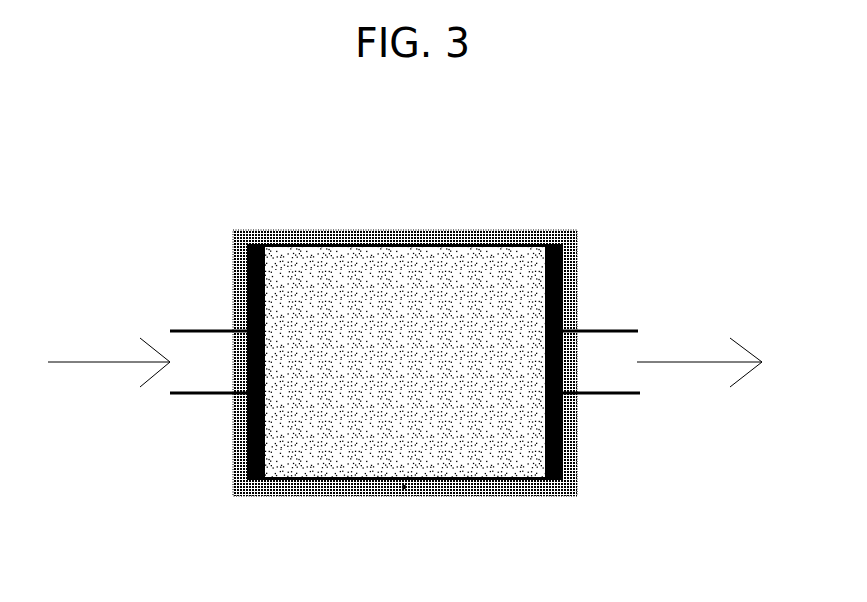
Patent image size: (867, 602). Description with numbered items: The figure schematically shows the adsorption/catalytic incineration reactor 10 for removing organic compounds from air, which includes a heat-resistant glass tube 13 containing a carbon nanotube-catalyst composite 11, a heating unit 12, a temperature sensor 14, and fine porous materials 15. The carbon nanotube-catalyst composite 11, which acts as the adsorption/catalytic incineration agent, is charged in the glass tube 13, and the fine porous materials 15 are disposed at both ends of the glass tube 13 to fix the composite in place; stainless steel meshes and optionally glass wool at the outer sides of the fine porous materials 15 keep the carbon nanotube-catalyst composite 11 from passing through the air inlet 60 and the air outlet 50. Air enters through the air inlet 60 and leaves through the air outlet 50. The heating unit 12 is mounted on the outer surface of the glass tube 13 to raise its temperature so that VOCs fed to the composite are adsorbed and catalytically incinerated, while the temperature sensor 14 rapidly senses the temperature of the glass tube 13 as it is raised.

The adsorption/catalytic incineration reactor 10 is at (223, 185).
The carbon nanotube-catalyst composite 11 is at (467, 315).
The heating unit 12 is at (432, 233).
The glass tube 13 is at (358, 245).
The temperature sensor 14 is at (404, 486).
The fine porous material 15 is at (266, 247).
The air outlet 50 is at (608, 324).
The air inlet 60 is at (195, 330).